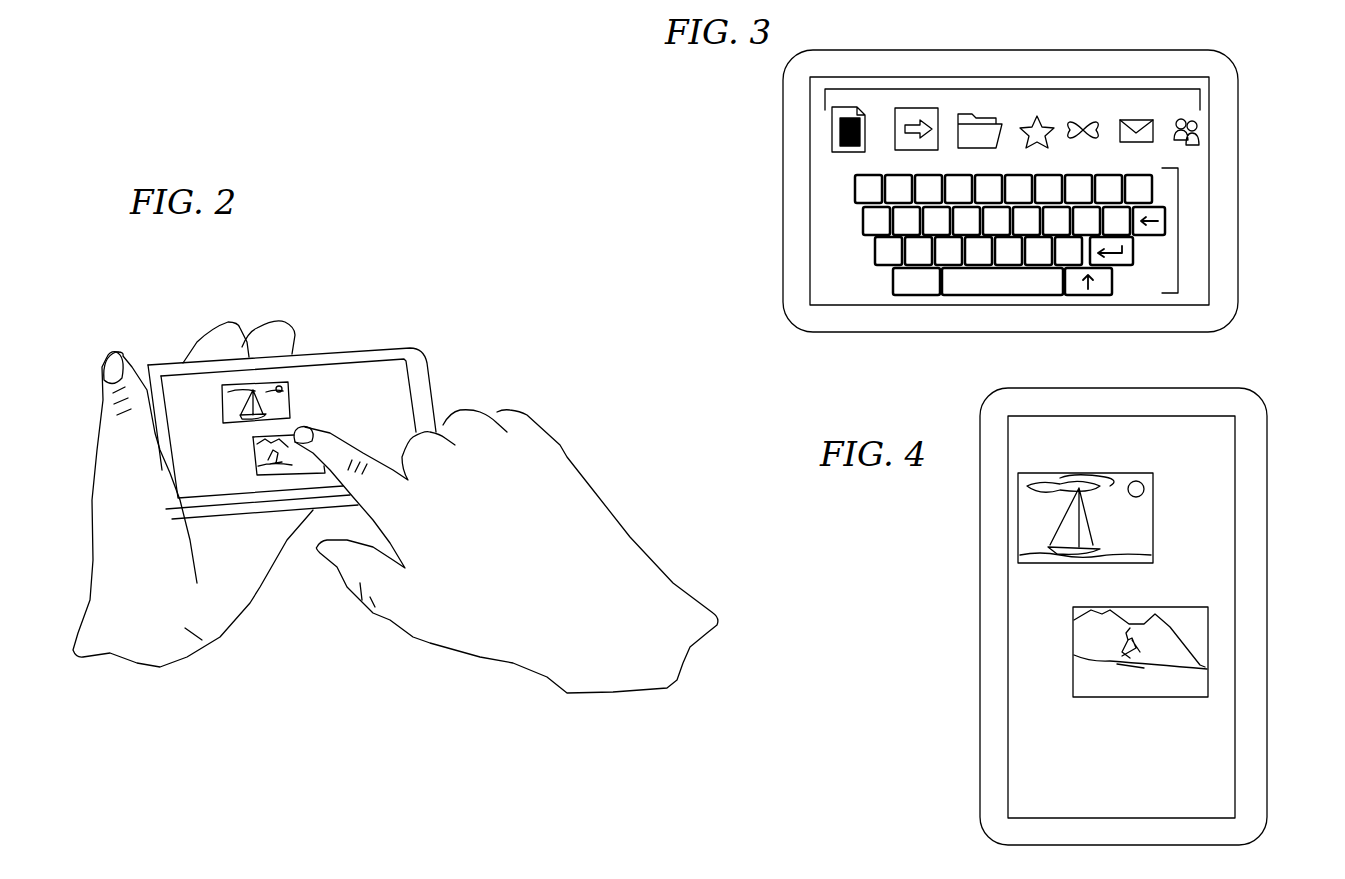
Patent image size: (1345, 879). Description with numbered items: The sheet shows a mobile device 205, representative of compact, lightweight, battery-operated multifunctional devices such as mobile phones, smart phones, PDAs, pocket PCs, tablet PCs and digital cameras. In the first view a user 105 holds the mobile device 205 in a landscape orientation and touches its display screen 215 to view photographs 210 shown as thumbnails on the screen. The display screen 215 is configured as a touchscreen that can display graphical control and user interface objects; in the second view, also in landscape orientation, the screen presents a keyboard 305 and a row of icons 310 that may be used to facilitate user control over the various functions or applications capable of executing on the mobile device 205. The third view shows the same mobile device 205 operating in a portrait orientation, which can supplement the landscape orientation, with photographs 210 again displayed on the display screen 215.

In FIG. 2, the user 105 is at (580, 463).
In FIG. 2, the mobile device 205 is at (427, 372).
In FIG. 3, the mobile device 205 is at (923, 50).
In FIG. 4, the mobile device 205 is at (1265, 461).
In FIG. 2, the photographs 210 is at (282, 387).
In FIG. 2, the display screen 215 is at (337, 395).
In FIG. 3, the display screen 215 is at (830, 180).
In FIG. 4, the display screen 215 is at (1022, 650).
In FIG. 3, the keyboard 305 is at (1181, 231).
In FIG. 3, the icons 310 is at (1011, 88).